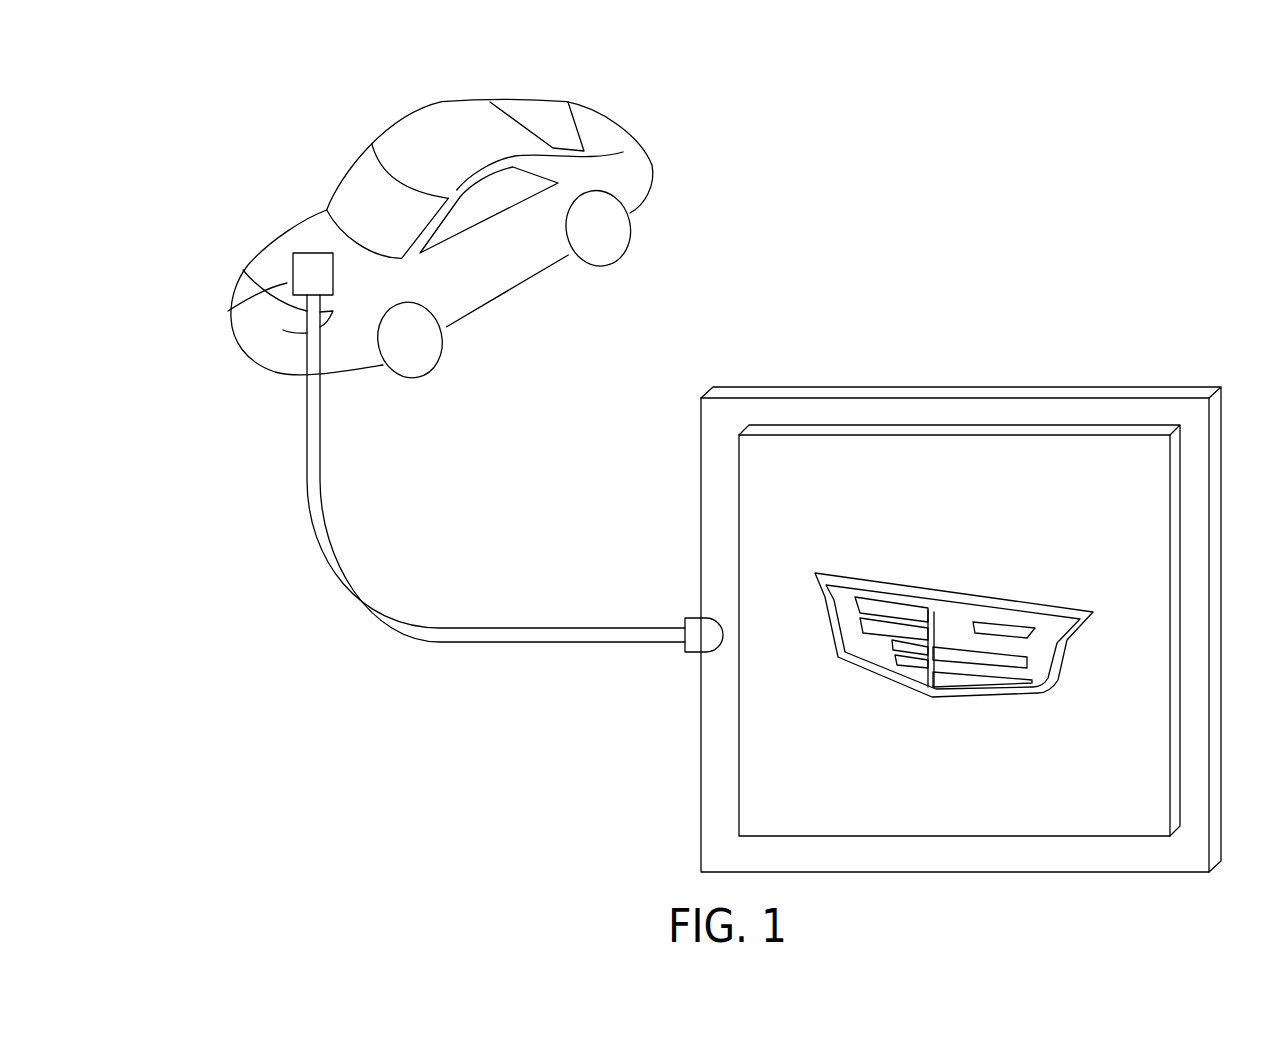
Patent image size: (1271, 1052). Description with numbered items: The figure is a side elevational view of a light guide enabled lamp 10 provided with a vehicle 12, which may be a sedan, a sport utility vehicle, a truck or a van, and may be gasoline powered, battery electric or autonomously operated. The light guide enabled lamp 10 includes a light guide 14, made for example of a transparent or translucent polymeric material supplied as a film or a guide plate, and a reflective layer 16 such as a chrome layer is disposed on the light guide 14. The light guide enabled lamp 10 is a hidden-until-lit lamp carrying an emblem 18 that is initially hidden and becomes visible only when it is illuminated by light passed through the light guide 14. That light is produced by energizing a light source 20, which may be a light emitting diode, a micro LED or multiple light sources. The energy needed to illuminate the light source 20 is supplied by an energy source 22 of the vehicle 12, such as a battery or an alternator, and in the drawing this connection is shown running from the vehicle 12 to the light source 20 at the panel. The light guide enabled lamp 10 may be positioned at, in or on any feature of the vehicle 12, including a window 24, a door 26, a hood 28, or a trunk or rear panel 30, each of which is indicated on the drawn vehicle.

The light guide enabled lamp 10 is at (898, 233).
The vehicle 12 is at (588, 84).
The light guide 14 is at (963, 455).
The reflective layer 16 is at (1195, 647).
The emblem 18 is at (958, 615).
The light source 20 is at (697, 642).
The energy source 22 is at (325, 289).
The window 24 is at (493, 203).
The door 26 is at (502, 277).
The hood 28 is at (228, 311).
The trunk or rear panel 30 is at (592, 122).